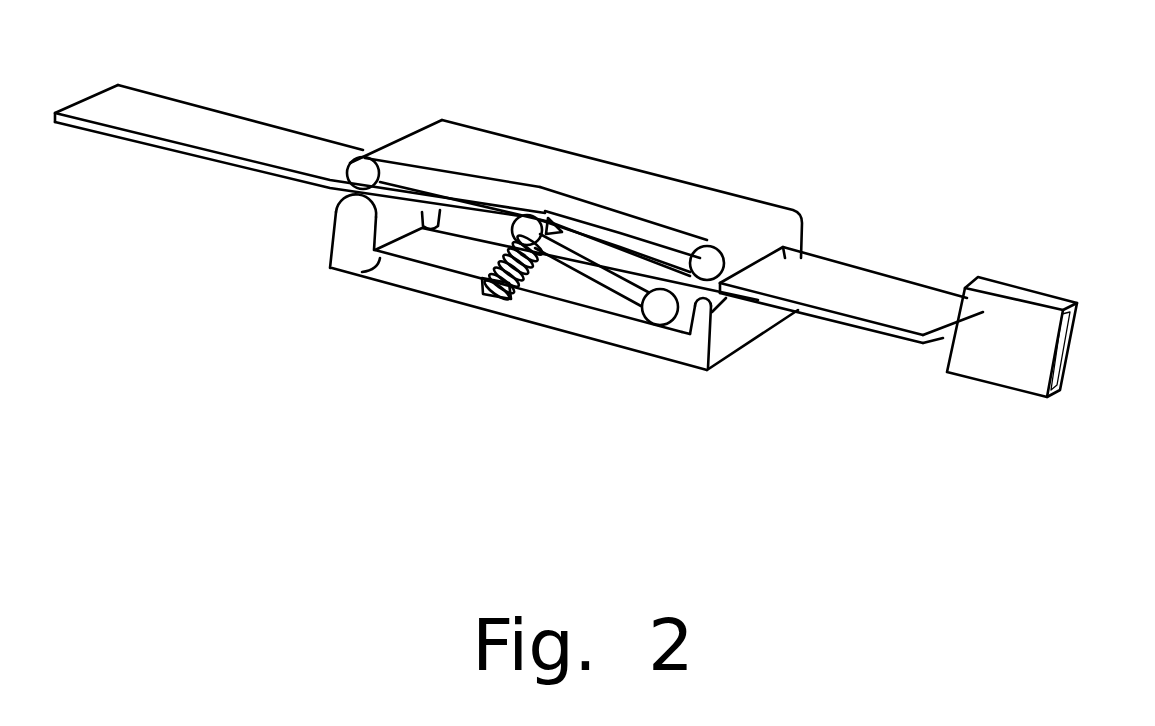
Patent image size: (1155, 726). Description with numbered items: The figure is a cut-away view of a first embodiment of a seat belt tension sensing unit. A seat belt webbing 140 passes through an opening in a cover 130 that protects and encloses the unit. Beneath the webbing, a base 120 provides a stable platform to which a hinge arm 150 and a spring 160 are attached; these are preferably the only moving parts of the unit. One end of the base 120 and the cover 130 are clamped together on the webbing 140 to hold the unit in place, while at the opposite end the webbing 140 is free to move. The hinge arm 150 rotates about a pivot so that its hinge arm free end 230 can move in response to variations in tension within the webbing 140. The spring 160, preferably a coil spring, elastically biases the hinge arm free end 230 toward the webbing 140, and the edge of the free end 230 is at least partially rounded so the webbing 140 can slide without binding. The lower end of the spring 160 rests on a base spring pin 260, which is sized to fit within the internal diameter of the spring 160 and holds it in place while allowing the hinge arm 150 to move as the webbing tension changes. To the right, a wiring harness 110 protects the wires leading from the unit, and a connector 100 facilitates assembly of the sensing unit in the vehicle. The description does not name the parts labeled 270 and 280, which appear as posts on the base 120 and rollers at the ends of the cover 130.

The connector 100 is at (1017, 320).
The wiring harness 110 is at (943, 340).
The base 120 is at (347, 273).
The cover 130 is at (622, 178).
The seat belt webbing 140 is at (233, 130).
The hinge arm 150 is at (587, 288).
The spring 160 is at (483, 280).
The hinge arm free end 230 is at (510, 222).
The base spring pin 260 is at (503, 300).
The support posts 270 is at (352, 224).
The guide rollers 280 is at (362, 168).